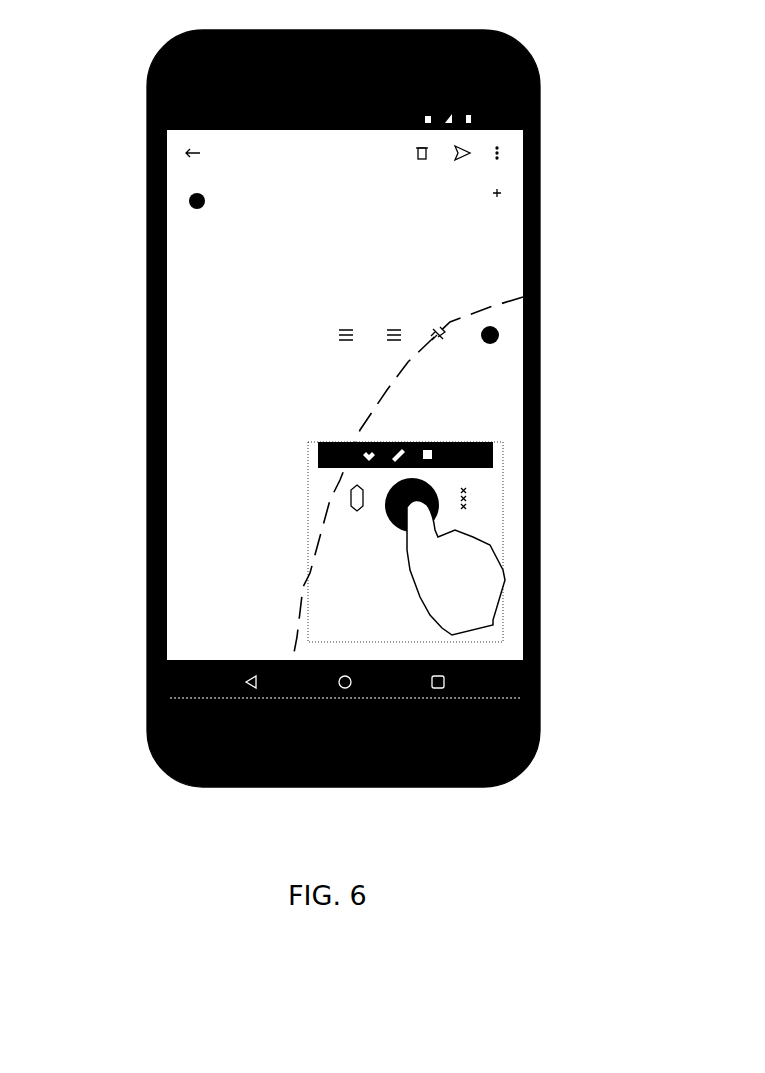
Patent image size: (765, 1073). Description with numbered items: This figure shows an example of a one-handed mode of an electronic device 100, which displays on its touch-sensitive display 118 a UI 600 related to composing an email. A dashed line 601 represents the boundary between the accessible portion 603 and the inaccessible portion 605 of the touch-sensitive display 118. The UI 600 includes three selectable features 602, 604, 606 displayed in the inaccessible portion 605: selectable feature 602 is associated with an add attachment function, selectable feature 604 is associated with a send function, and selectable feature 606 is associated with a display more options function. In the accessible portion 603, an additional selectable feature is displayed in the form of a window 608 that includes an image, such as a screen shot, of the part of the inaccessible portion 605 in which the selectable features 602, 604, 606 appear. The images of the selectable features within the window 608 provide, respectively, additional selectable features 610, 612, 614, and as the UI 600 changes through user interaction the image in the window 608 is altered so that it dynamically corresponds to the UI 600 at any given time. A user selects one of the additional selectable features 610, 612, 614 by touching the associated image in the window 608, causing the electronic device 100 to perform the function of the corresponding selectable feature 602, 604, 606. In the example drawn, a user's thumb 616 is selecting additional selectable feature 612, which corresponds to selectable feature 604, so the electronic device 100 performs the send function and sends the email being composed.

The electronic device 100 is at (232, 33).
The touch-sensitive display 118 is at (190, 309).
The UI 600 is at (175, 460).
The dashed line 601 is at (427, 345).
The selectable feature 602 is at (425, 146).
The accessible portion 603 is at (475, 400).
The selectable feature 604 is at (466, 150).
The inaccessible portion 605 is at (412, 267).
The selectable feature 606 is at (500, 157).
The window 608 is at (493, 463).
The additional selectable feature 610 is at (350, 498).
The additional selectable feature 612 is at (428, 492).
The additional selectable feature 614 is at (467, 502).
The user's thumb 616 is at (428, 530).